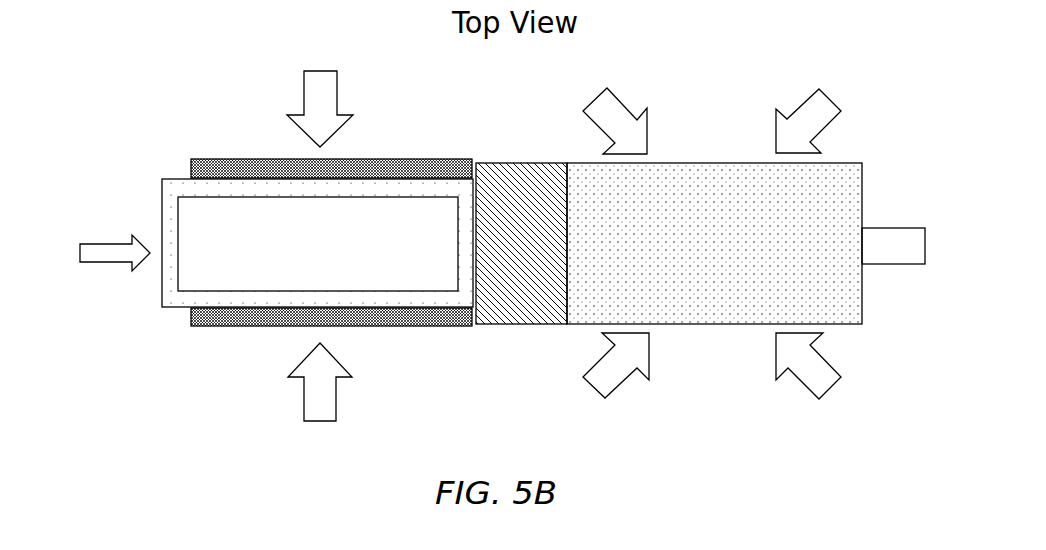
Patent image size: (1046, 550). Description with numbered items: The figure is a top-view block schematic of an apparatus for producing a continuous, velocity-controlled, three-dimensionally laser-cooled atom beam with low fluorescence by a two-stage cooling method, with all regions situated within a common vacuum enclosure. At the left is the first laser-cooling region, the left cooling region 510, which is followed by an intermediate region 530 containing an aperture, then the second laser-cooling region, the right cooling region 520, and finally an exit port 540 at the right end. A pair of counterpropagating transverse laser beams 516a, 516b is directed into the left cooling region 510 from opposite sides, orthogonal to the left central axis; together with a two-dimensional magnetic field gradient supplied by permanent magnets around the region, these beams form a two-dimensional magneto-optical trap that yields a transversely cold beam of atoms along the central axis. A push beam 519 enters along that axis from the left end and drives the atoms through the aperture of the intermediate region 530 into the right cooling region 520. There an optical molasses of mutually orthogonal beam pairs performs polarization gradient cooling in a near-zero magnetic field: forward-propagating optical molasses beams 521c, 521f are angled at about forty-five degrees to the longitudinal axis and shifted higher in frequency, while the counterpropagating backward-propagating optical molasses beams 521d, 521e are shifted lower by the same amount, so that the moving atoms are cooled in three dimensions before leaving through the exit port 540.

The left cooling region 510 is at (317, 242).
The transverse laser beam 516a is at (347, 90).
The transverse laser beam 516b is at (297, 398).
The push beam 519 is at (115, 265).
The right cooling region 520 is at (714, 243).
The forward-propagating optical molasses beam 521c is at (598, 127).
The backward-propagating optical molasses beam 521d is at (830, 353).
The backward-propagating optical molasses beam 521e is at (837, 123).
The forward-propagating optical molasses beam 521f is at (595, 355).
The intermediate region 530 is at (521, 243).
The exit port 540 is at (913, 228).